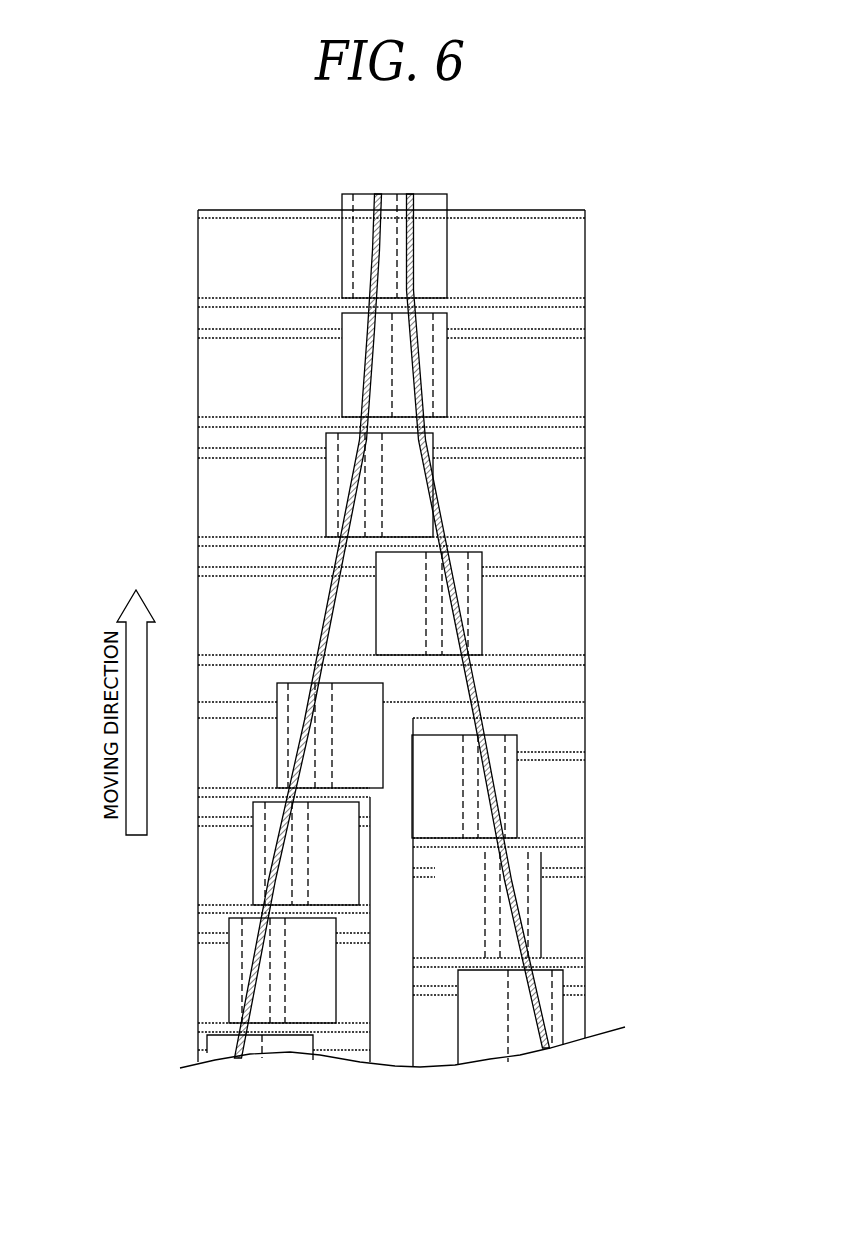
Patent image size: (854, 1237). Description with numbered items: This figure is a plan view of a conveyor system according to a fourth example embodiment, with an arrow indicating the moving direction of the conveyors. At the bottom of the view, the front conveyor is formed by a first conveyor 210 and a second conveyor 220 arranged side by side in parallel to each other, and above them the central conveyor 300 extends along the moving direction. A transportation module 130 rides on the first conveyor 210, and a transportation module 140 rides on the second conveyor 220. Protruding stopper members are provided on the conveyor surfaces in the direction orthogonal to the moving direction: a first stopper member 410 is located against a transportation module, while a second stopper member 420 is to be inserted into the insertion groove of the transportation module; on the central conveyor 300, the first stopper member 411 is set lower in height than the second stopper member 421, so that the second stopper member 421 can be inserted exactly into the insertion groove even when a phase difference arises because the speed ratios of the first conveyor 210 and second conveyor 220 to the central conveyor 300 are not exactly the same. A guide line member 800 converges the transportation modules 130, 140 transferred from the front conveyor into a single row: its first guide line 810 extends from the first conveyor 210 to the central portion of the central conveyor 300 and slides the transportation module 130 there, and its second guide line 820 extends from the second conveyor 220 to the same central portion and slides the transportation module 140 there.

The transportation module 130 is at (263, 857).
The transportation module 140 is at (510, 790).
The first conveyor 210 is at (200, 967).
The second conveyor 220 is at (575, 918).
The central conveyor 300 is at (178, 460).
The first stopper member 410 is at (585, 962).
The first stopper member 411 is at (580, 543).
The second stopper member 420 is at (583, 870).
The second stopper member 421 is at (578, 453).
The guide line member 800 is at (499, 626).
The first guide line 810 is at (330, 612).
The second guide line 820 is at (473, 692).